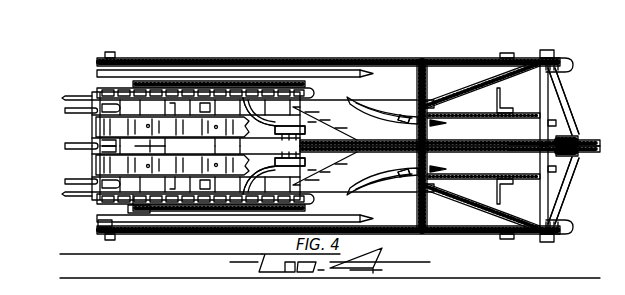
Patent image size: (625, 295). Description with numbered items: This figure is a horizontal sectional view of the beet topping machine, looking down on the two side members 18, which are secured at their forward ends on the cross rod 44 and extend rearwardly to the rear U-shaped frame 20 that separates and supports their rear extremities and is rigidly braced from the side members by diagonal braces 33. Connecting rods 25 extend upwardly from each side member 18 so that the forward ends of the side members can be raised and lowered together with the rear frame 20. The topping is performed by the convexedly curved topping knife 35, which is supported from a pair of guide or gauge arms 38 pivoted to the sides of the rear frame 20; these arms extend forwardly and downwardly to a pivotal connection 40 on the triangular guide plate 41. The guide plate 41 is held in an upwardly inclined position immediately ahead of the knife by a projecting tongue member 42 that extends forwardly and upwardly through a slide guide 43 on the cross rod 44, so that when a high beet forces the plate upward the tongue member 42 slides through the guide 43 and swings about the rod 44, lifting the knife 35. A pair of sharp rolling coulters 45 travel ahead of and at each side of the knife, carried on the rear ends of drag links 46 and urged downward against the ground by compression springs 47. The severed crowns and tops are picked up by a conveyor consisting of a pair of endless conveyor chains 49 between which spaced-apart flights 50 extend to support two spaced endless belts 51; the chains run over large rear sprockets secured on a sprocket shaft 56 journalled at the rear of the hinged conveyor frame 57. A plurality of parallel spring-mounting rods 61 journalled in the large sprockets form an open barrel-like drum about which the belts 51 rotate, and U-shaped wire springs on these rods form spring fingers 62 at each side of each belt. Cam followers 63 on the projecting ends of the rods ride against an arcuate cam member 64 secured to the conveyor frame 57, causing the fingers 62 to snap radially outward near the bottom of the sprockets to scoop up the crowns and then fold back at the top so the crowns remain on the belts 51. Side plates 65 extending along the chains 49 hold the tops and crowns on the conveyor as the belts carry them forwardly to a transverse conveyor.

The side members 18 is at (432, 46).
The rear U-shaped frame 20 is at (106, 59).
The connecting rods 25 is at (505, 53).
The diagonal braces 33 is at (165, 58).
The topping knife 35 is at (301, 124).
The guide arms 38 is at (238, 77).
The pivotal connection 40 is at (353, 99).
The triangular guide plate 41 is at (317, 158).
The tongue member 42 is at (482, 142).
The slide guide 43 is at (560, 131).
The cross rod 44 is at (548, 180).
The rolling coulters 45 is at (368, 106).
The drag links 46 is at (466, 92).
The compression springs 47 is at (408, 117).
The endless conveyor chains 49 is at (275, 122).
The flights 50 is at (159, 147).
The endless belts 51 is at (110, 123).
The sprocket shaft 56 is at (200, 80).
The conveyor frame 57 is at (330, 78).
The spring-mounting rods 61 is at (65, 146).
The spring fingers 62 is at (65, 111).
The cam followers 63 is at (103, 224).
The cam member 64 is at (143, 215).
The side plates 65 is at (92, 97).